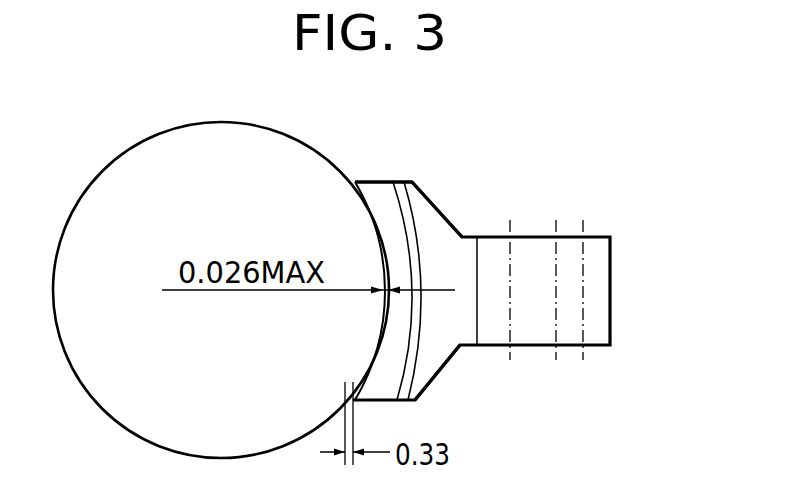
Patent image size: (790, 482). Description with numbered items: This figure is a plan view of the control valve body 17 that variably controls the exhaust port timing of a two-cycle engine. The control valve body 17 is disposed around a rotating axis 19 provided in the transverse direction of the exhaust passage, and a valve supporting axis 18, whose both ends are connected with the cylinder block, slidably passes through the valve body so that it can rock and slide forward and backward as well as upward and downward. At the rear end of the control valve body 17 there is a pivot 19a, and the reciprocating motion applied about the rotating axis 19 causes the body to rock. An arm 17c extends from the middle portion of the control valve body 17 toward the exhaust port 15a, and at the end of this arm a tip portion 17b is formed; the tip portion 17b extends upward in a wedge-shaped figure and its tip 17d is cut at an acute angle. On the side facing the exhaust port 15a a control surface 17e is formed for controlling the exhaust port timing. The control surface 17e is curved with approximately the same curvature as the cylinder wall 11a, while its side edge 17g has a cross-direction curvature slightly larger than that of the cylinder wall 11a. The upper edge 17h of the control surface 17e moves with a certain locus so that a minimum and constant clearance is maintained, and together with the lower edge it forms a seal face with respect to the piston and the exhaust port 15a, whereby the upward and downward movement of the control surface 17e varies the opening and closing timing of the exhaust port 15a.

The cylinder wall 11a is at (214, 124).
The exhaust port 15a is at (360, 218).
The control valve body 17 is at (460, 227).
The tip portion 17b is at (376, 182).
The arm 17c is at (455, 348).
The tip 17d is at (411, 182).
The control surface 17e is at (378, 351).
The side edge 17g is at (355, 186).
The upper edge 17h is at (410, 312).
The valve supporting axis 18 is at (512, 252).
The rotating axis 19 is at (556, 320).
The pivot 19a is at (585, 226).